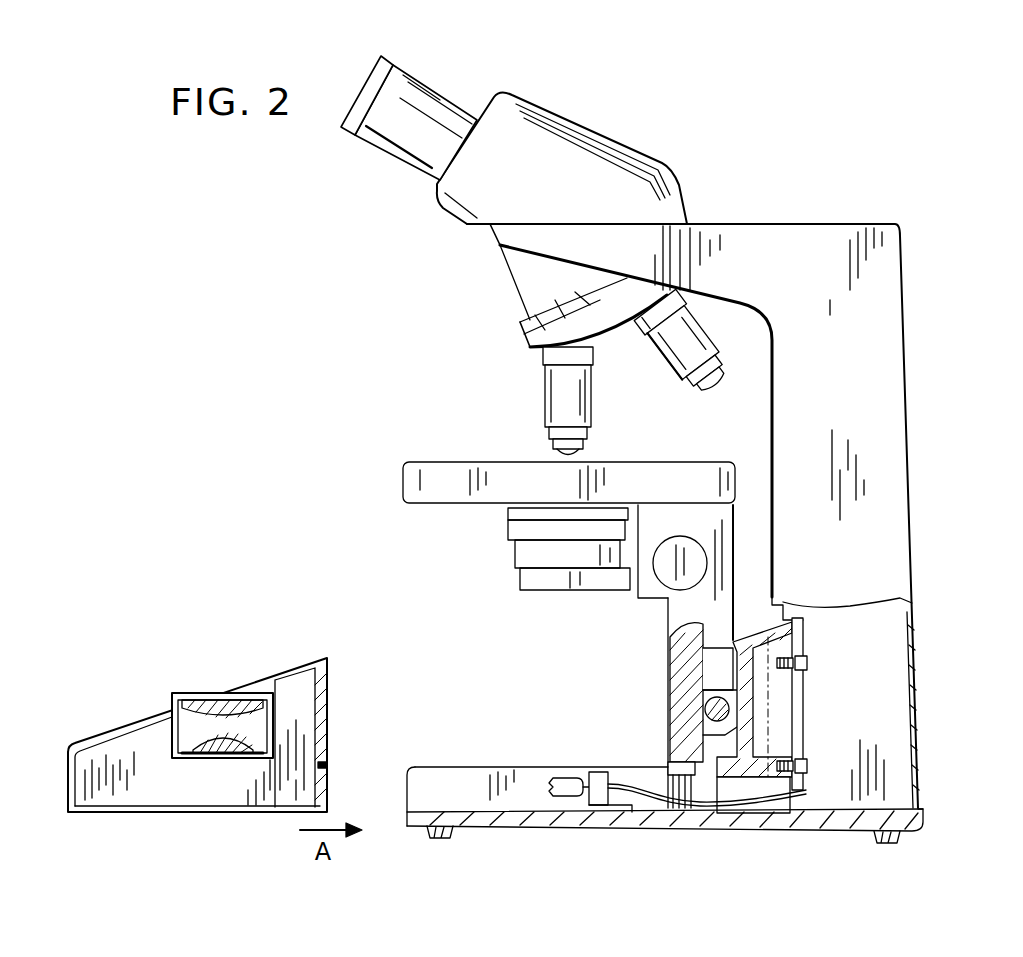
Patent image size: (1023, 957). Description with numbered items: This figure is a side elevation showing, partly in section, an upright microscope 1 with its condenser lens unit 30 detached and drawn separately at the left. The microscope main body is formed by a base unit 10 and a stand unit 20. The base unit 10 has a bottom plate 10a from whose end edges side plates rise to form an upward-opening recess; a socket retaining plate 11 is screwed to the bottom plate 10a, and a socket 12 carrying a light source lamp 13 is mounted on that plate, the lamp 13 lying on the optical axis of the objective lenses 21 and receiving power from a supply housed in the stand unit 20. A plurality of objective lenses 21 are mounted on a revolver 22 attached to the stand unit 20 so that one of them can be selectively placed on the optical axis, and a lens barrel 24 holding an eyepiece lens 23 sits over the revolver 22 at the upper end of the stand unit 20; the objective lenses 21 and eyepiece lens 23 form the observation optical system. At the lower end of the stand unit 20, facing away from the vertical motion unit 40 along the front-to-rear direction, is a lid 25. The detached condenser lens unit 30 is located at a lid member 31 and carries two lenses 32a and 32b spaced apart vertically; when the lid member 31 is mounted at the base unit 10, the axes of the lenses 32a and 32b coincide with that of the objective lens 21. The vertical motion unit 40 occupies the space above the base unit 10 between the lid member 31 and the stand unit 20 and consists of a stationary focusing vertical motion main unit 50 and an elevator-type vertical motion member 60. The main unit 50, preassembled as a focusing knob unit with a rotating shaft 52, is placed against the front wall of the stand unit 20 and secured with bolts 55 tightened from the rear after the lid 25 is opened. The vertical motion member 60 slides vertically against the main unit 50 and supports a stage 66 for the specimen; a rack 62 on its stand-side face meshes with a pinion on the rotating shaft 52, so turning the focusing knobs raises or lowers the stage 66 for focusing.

The upright microscope 1 is at (878, 213).
The base unit 10 is at (470, 828).
The bottom plate 10a is at (456, 772).
The socket retaining plate 11 is at (612, 810).
The socket 12 is at (598, 806).
The light source lamp 13 is at (560, 797).
The stand unit 20 is at (855, 483).
The objective lenses 21 is at (552, 400).
The revolver 22 is at (527, 334).
The eyepiece lens 23 is at (350, 133).
The lens barrel 24 is at (656, 190).
The lid 25 is at (915, 793).
The condenser lens unit 30 is at (160, 712).
The lid member 31 is at (305, 675).
The lens 32a is at (218, 699).
The lens 32b is at (218, 758).
The vertical motion unit 40 is at (737, 628).
The focusing vertical motion main unit 50 is at (733, 781).
The rotating shaft 52 is at (750, 700).
The bolts 55 is at (808, 772).
The vertical motion member 60 is at (690, 670).
The rack 62 is at (712, 680).
The stage 66 is at (405, 490).